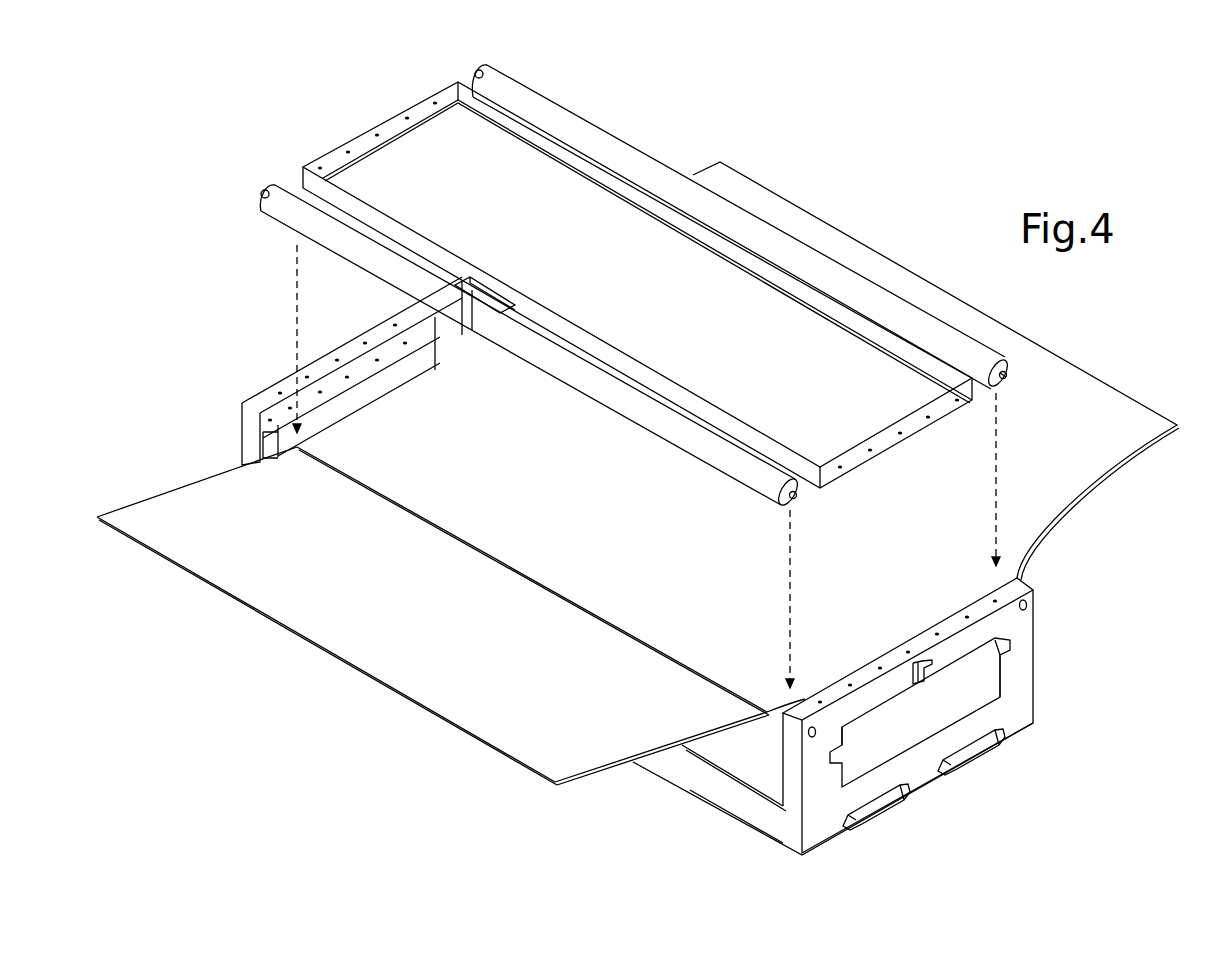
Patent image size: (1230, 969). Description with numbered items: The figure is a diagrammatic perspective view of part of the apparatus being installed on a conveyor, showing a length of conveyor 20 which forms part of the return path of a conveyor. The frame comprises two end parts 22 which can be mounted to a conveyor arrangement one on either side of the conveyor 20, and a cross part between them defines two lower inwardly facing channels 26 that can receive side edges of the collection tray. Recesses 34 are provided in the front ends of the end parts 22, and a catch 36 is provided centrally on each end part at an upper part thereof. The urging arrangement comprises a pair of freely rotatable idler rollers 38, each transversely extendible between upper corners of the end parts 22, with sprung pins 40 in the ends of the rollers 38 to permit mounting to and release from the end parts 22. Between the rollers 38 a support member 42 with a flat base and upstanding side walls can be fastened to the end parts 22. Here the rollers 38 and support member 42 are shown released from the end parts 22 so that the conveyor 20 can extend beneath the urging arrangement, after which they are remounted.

The conveyor 20 is at (1092, 462).
The end parts 22 is at (1020, 630).
The lower inwardly facing channels 26 is at (1023, 707).
The recesses 34 is at (1003, 672).
The catch 36 is at (928, 678).
The idler rollers 38 is at (285, 206).
The sprung pins 40 is at (1012, 376).
The support member 42 is at (383, 164).